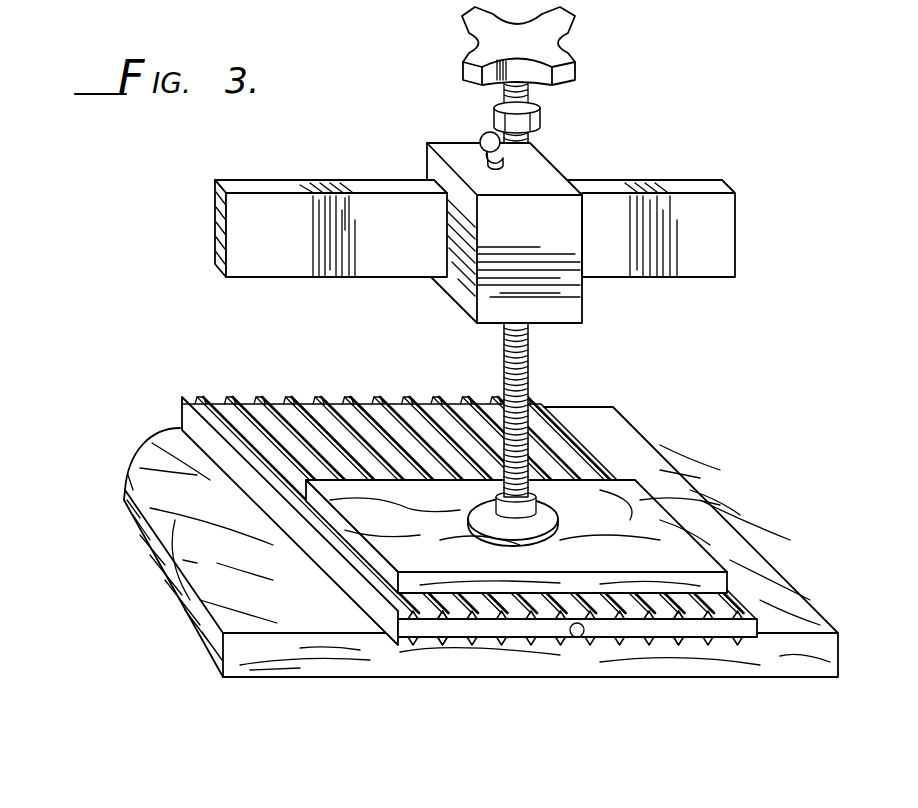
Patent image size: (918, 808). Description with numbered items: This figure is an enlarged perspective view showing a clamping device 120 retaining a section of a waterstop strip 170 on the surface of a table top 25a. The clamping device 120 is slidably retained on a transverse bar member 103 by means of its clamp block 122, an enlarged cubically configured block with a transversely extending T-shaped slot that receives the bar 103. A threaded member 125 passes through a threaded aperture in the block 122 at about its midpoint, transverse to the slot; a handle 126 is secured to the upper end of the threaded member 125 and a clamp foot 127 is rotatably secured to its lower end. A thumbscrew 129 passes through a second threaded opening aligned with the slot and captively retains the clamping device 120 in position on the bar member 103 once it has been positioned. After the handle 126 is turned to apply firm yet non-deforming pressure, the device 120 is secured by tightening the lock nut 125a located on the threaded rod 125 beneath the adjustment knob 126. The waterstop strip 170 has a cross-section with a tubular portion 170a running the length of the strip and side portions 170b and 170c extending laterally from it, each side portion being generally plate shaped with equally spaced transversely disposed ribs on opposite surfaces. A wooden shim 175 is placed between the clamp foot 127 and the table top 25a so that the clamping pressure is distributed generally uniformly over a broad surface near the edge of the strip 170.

The table top 25a is at (145, 470).
The transverse bar member 103 is at (367, 194).
The clamping device 120 is at (514, 276).
The clamp block 122 is at (463, 297).
The threaded member 125 is at (528, 164).
The lock nut 125a is at (497, 108).
The handle 126 is at (487, 45).
The clamp foot 127 is at (472, 514).
The thumbscrew 129 is at (481, 130).
The waterstop strip 170 is at (469, 525).
The tubular portion 170a is at (577, 640).
The side portion 170b is at (452, 645).
The side portion 170c is at (670, 645).
The wooden shim 175 is at (668, 518).